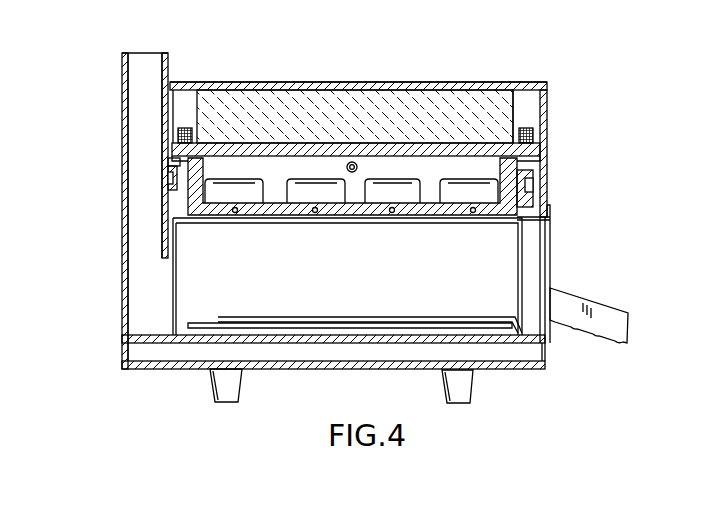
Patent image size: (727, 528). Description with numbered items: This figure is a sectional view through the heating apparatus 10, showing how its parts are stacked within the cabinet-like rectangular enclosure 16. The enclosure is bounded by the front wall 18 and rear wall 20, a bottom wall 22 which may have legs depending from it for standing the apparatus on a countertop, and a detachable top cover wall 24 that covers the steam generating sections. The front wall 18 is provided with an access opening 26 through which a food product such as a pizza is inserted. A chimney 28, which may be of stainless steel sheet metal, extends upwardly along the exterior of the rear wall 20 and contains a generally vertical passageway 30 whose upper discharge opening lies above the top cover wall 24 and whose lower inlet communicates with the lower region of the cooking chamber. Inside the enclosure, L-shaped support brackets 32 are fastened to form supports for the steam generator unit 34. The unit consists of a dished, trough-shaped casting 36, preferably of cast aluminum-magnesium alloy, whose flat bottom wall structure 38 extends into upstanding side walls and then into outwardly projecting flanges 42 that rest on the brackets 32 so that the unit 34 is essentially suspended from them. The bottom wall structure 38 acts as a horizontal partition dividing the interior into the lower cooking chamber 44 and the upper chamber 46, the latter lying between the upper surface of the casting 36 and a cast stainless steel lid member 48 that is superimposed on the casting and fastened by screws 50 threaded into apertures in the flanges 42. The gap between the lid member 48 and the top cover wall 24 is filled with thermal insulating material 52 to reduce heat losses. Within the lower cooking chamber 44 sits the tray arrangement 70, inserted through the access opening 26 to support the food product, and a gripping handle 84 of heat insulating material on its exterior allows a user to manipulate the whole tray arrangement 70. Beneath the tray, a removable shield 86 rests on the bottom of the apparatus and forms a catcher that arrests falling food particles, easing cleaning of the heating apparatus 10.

The heating apparatus 10 is at (291, 81).
The rectangular enclosure 16 is at (547, 140).
The front wall 18 is at (547, 198).
The rear wall 20 is at (163, 252).
The bottom wall 22 is at (172, 368).
The top cover wall 24 is at (453, 82).
The access opening 26 is at (547, 233).
The chimney 28 is at (122, 114).
The vertical passageway 30 is at (146, 62).
The L-shaped support brackets 32 is at (167, 180).
The steam generator unit 34 is at (444, 179).
The casting 36 is at (517, 208).
The bottom wall structure 38 is at (248, 213).
The flanges 42 is at (167, 164).
The cooking chamber 44 is at (357, 270).
The upper chamber 46 is at (287, 178).
The lid member 48 is at (485, 143).
The screws 50 is at (533, 133).
The thermal insulating material 52 is at (350, 103).
The tray arrangement 70 is at (492, 332).
The gripping handle 84 is at (602, 340).
The shield 86 is at (197, 330).